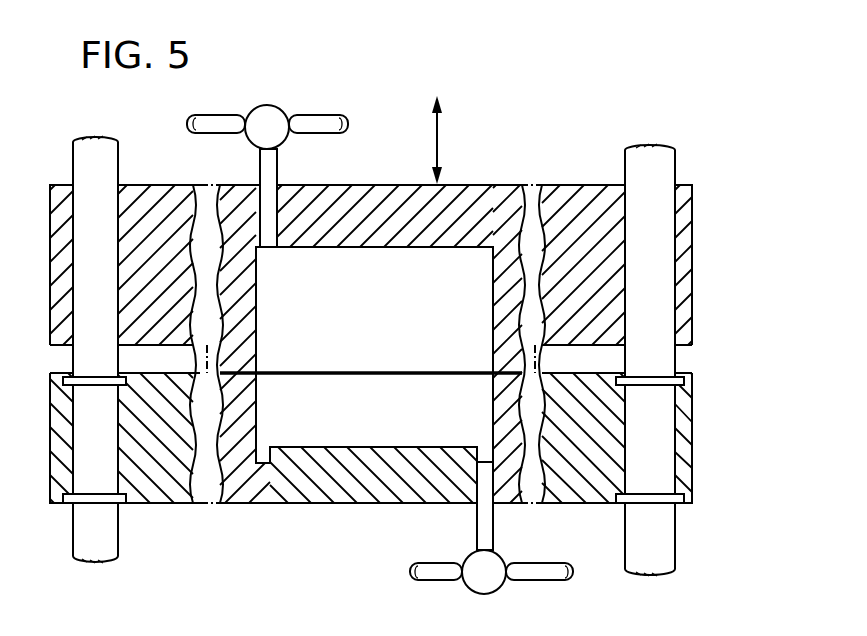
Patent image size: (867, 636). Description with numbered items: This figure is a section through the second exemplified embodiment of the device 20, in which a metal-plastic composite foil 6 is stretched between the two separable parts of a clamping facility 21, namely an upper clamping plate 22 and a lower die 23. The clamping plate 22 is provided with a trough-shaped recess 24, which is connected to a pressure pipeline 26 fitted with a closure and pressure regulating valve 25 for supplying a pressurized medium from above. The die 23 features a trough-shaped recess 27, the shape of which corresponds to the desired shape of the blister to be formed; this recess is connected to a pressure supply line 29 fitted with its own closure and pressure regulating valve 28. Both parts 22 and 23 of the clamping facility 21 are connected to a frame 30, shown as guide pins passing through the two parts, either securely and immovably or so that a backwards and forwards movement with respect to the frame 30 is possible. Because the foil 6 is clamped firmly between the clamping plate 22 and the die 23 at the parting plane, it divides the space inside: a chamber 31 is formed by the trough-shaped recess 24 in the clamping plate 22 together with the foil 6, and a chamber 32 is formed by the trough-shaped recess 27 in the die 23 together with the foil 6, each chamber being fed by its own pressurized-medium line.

The device 20 is at (500, 179).
The clamping facility 21 is at (692, 382).
The clamping plate 22 is at (680, 247).
The die 23 is at (678, 473).
The trough-shaped recess 24 is at (351, 276).
The closure and pressure regulating valve 25 is at (276, 112).
The pressure pipeline 26 is at (318, 123).
The trough-shaped recess 27 is at (430, 425).
The closure and pressure regulating valve 28 is at (494, 580).
The pressure supply line 29 is at (532, 572).
The frame 30 is at (100, 533).
The chamber 31 is at (393, 332).
The chamber 32 is at (392, 438).
The foil 6 is at (289, 372).